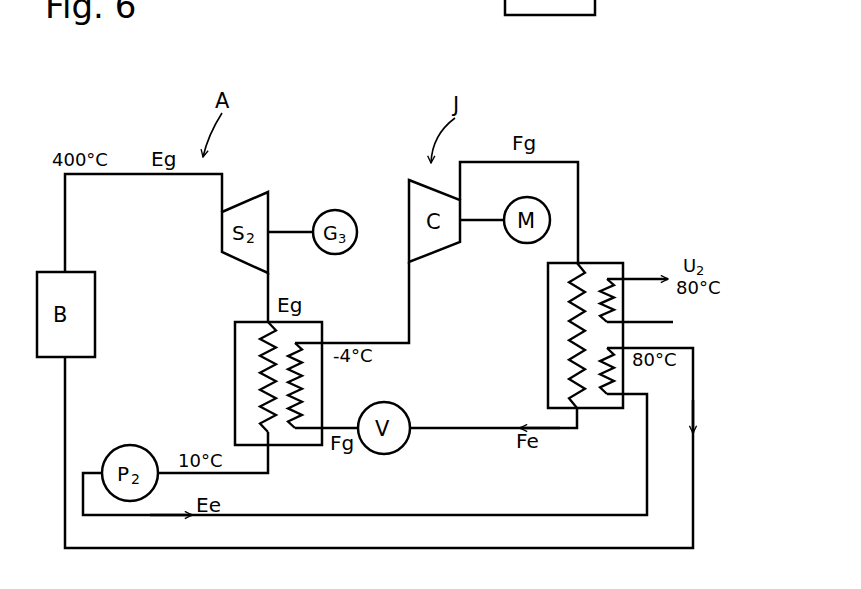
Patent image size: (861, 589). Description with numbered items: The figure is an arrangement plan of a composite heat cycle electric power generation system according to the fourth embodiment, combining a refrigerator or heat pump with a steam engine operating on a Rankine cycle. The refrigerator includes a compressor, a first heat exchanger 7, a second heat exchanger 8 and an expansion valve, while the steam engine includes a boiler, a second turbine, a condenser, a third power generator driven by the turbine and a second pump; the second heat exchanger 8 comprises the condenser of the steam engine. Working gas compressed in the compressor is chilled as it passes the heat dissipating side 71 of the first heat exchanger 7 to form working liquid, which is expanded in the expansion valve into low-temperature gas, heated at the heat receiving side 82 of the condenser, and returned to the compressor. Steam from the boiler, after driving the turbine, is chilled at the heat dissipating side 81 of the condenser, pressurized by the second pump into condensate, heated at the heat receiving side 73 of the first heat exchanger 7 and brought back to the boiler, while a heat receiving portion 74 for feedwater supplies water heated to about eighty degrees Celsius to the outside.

The first heat exchanger 7 is at (606, 263).
The second heat exchanger 8 is at (235, 340).
The heat dissipating side 71 is at (577, 323).
The heat receiving side 73 is at (607, 395).
The heat receiving portion 74 is at (608, 305).
The heat dissipating side 81 is at (270, 411).
The heat receiving side 82 is at (290, 430).